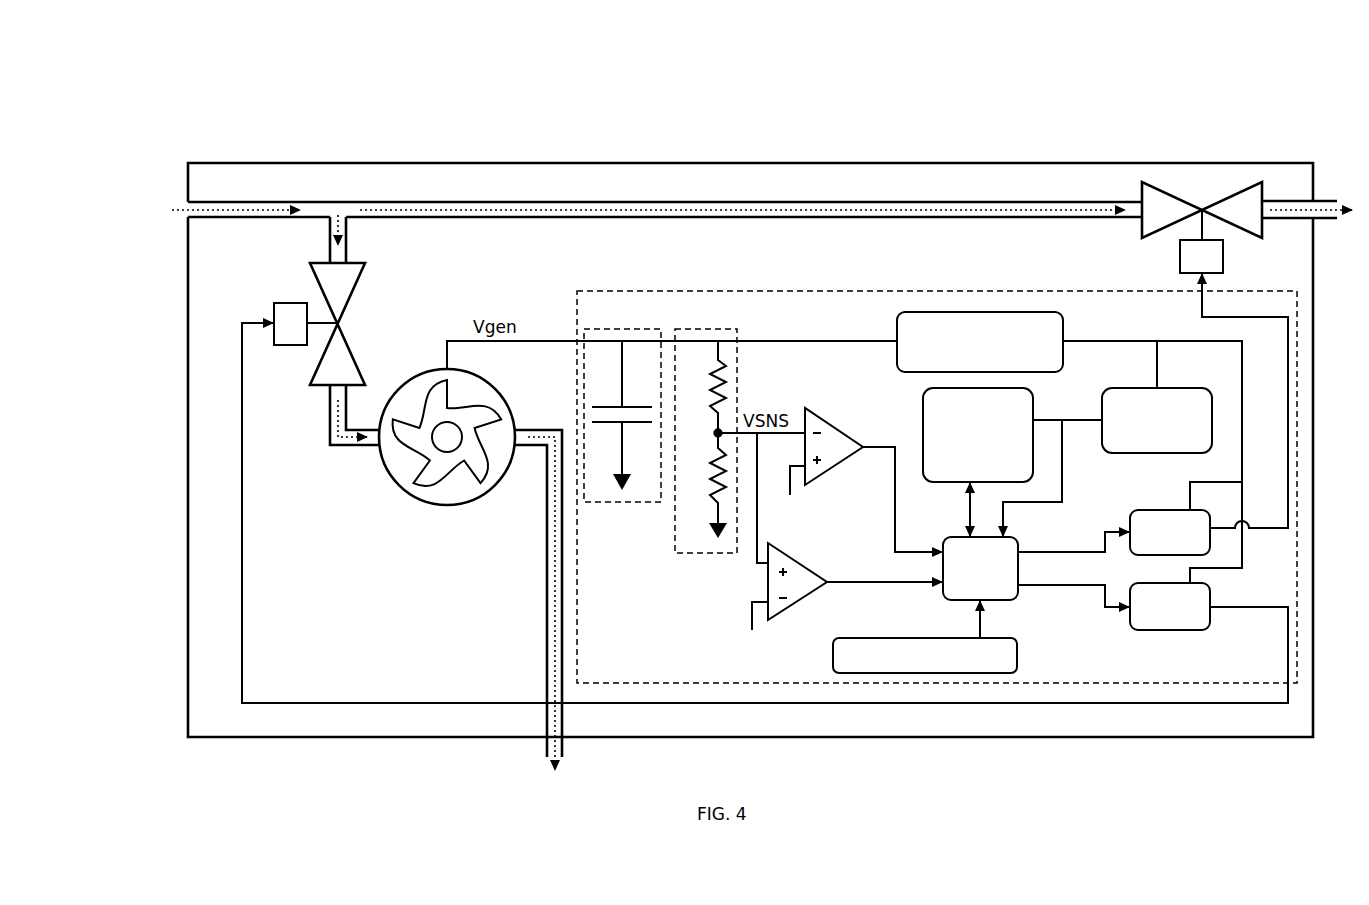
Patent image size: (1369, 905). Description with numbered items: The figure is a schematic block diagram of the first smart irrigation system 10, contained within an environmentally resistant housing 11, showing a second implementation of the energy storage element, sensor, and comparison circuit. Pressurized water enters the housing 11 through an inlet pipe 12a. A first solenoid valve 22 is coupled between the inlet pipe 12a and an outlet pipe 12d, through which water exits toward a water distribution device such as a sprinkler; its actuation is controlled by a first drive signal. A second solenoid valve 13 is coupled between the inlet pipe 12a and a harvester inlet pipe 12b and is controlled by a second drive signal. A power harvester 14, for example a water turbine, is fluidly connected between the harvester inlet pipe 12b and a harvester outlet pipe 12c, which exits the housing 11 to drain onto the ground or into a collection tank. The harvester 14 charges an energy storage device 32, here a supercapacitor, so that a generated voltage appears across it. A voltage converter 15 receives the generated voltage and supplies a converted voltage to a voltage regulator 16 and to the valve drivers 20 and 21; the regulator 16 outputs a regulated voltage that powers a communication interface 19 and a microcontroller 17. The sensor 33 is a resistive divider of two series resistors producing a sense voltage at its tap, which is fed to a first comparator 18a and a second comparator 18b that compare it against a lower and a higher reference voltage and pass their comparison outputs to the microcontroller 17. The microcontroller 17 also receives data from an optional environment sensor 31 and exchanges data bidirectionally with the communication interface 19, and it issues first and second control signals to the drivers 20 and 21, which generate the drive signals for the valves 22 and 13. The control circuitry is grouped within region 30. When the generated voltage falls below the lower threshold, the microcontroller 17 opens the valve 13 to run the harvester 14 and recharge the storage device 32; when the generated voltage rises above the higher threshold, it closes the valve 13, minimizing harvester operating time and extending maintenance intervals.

The smart irrigation system 10 is at (793, 100).
The housing 11 is at (491, 160).
The inlet pipe 12a is at (289, 219).
The harvester inlet pipe 12b is at (336, 447).
The harvester outlet pipe 12c is at (548, 538).
The outlet pipe 12d is at (1295, 222).
The second solenoid valve 13 is at (353, 291).
The power harvester 14 is at (410, 494).
The voltage converter 15 is at (901, 373).
The voltage regulator 16 is at (1185, 388).
The microcontroller 17 is at (946, 600).
The first comparator 18a is at (824, 419).
The second comparator 18b is at (802, 602).
The communication interface 19 is at (926, 482).
The valve driver 20 is at (1133, 510).
The valve driver 21 is at (1133, 631).
The first solenoid valve 22 is at (1148, 240).
The control circuit 30 is at (595, 290).
The environment sensor 31 is at (1016, 651).
The energy storage device 32 is at (592, 502).
The sensor 33 is at (686, 328).